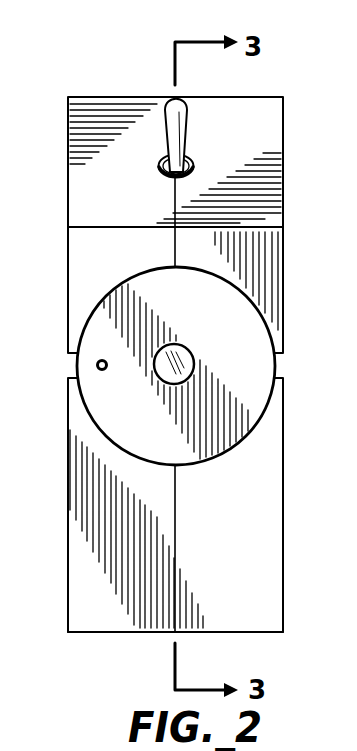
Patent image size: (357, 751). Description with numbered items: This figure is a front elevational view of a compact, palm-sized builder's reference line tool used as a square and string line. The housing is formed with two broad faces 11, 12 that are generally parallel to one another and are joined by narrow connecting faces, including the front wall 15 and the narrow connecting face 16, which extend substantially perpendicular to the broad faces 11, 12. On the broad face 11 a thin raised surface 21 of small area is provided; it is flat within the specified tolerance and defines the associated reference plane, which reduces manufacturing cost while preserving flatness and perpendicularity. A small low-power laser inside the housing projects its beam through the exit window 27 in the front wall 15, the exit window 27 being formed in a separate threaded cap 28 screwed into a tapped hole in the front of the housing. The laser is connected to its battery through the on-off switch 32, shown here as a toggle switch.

The broad face 11 is at (61, 220).
The broad face 12 is at (292, 398).
The front wall 15 is at (110, 607).
The narrow connecting face 16 is at (88, 200).
The thin raised surface 21 is at (68, 530).
The exit window 27 is at (191, 353).
The threaded cap 28 is at (97, 325).
The on-off switch 32 is at (182, 133).